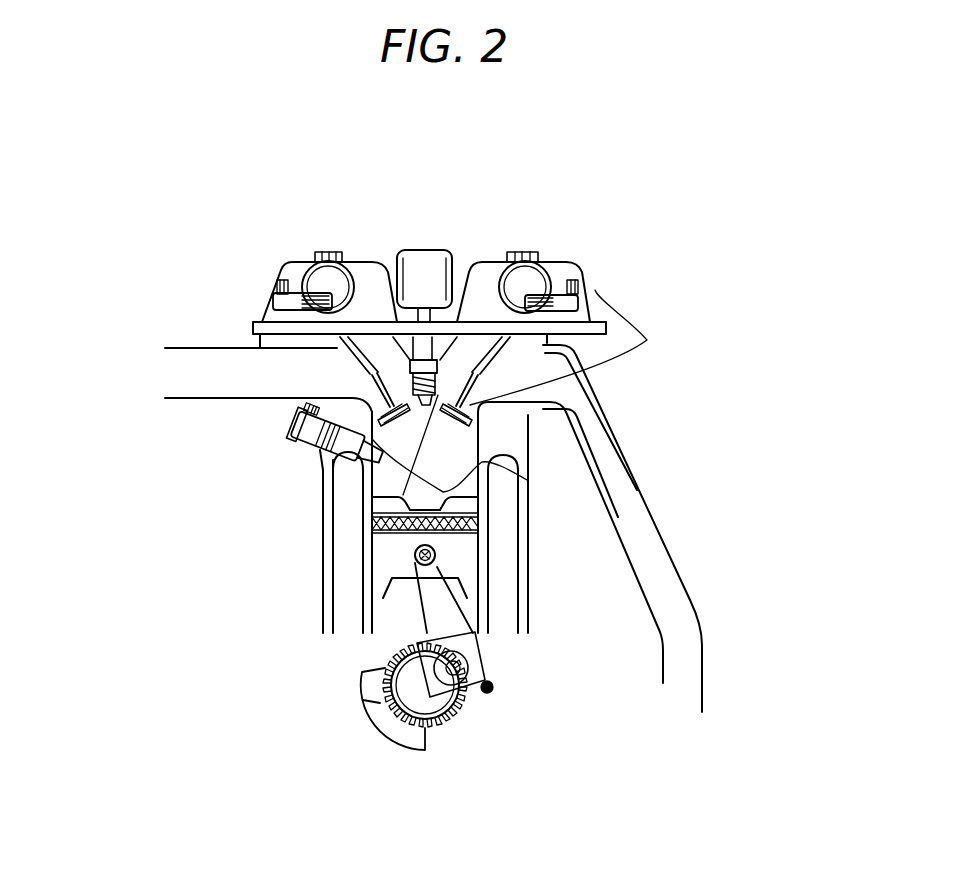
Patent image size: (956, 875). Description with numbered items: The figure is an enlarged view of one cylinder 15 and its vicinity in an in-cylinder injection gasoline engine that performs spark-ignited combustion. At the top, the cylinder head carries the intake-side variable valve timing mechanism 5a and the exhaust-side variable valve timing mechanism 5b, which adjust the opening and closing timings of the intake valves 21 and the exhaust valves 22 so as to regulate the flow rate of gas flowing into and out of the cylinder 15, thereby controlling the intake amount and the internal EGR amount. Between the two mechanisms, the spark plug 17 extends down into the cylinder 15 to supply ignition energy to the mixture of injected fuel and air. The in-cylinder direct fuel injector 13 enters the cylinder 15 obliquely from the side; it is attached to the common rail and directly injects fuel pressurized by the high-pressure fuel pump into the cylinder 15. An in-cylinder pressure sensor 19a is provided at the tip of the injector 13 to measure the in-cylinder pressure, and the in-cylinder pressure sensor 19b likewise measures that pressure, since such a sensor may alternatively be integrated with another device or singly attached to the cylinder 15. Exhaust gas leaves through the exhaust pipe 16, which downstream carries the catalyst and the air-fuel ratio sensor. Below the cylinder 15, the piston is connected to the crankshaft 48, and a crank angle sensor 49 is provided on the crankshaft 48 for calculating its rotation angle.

The intake-side variable valve timing mechanism 5a is at (283, 263).
The exhaust-side variable valve timing mechanism 5b is at (560, 280).
The spark plug 17 is at (433, 320).
The exhaust valve 22 is at (595, 290).
The intake valve 21 is at (358, 390).
The exhaust pipe 16 is at (615, 420).
The in-cylinder direct fuel injector 13 is at (293, 427).
The in-cylinder pressure sensor 19a is at (527, 480).
The in-cylinder pressure sensor 19b is at (375, 485).
The cylinder 15 is at (493, 573).
The crankshaft 48 is at (377, 707).
The crank angle sensor 49 is at (492, 683).